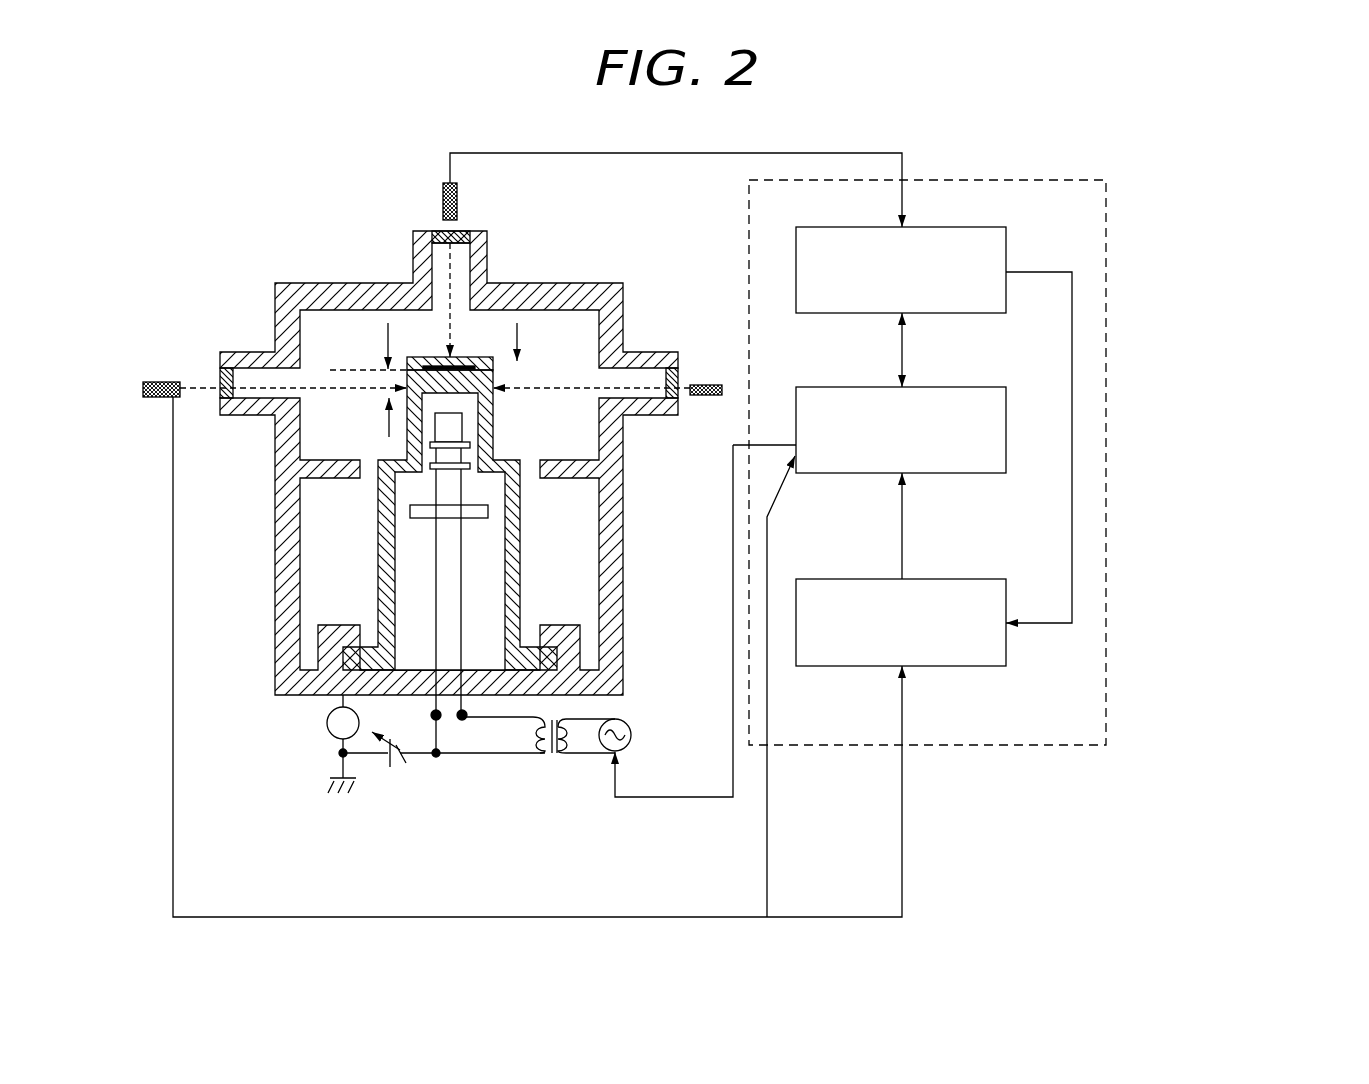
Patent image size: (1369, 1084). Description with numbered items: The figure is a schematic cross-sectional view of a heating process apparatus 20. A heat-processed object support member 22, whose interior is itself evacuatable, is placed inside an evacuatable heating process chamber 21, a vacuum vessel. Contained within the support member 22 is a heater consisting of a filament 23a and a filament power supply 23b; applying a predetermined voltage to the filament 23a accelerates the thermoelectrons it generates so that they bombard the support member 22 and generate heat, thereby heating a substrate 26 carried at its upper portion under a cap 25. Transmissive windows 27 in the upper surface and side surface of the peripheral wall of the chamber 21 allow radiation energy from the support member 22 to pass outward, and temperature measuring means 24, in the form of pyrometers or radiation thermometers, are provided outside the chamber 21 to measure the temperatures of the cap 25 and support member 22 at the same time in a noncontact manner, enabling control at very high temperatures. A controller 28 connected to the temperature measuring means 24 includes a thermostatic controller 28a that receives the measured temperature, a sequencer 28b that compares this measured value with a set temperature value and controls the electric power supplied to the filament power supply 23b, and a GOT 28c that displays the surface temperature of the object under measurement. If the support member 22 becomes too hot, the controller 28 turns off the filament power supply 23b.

The heating process apparatus 20 is at (507, 518).
The heating process chamber 21 is at (360, 283).
The heat-processed object support member 22 is at (378, 543).
The filament 23a is at (448, 463).
The filament power supply 23b is at (552, 795).
The temperature measuring means 24 is at (443, 193).
The cap 25 is at (470, 357).
The substrate 26 is at (420, 357).
The transmissive window 27 is at (462, 232).
The controller 28 is at (1106, 470).
The thermostatic controller 28a is at (1008, 245).
The sequencer 28b is at (970, 387).
The GOT (Graphic Operation Terminal) 28c is at (842, 579).